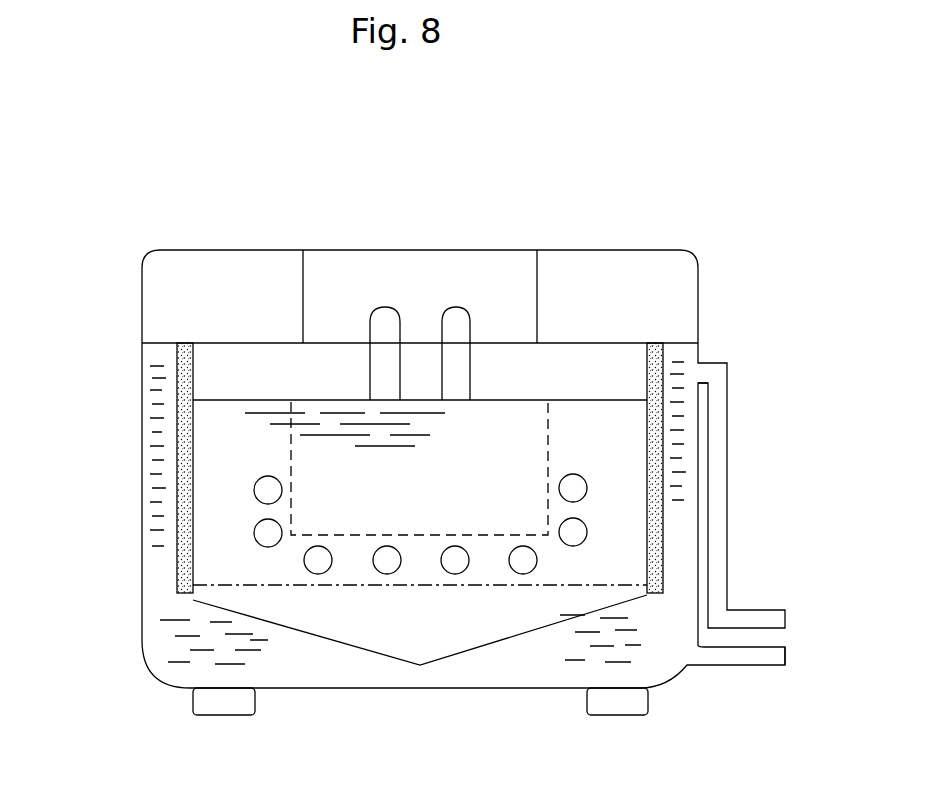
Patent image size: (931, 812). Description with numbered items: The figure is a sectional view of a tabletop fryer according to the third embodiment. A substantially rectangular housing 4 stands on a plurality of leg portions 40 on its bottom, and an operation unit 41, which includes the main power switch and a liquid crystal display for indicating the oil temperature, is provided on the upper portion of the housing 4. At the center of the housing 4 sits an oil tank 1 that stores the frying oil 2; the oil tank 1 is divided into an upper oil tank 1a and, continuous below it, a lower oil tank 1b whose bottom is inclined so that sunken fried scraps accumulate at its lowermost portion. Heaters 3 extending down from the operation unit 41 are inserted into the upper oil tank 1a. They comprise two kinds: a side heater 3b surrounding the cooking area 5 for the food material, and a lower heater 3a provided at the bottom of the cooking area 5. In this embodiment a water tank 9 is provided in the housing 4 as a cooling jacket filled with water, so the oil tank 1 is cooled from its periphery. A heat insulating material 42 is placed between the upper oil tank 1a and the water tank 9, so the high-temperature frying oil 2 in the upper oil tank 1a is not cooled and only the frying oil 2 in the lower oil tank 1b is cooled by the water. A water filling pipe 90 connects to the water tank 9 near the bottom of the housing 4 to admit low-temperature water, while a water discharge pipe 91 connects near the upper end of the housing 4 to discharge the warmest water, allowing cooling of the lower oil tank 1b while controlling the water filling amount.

The oil tank 1 is at (305, 647).
The upper oil tank 1a is at (222, 439).
The lower oil tank 1b is at (530, 605).
The frying oil 2 is at (538, 398).
The heaters 3 is at (463, 186).
The lower heater 3a is at (455, 308).
The side heater 3b is at (386, 308).
The housing 4 is at (137, 688).
The cooking area 5 is at (547, 460).
The water tank 9 is at (507, 675).
The leg portions 40 is at (218, 708).
The operation unit 41 is at (636, 252).
The heat insulating material 42 is at (180, 392).
The water filling pipe 90 is at (728, 660).
The water discharge pipe 91 is at (727, 560).